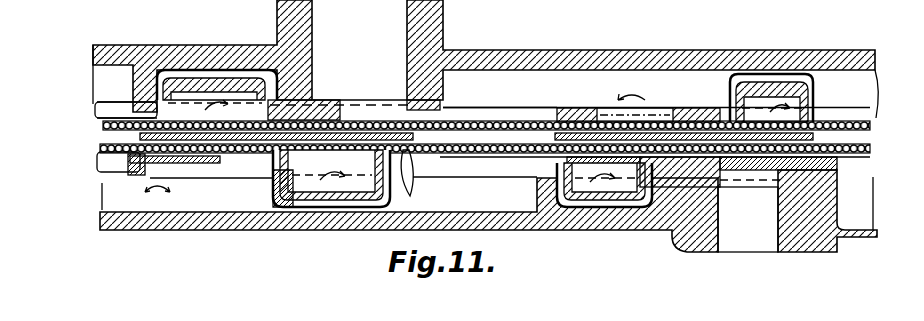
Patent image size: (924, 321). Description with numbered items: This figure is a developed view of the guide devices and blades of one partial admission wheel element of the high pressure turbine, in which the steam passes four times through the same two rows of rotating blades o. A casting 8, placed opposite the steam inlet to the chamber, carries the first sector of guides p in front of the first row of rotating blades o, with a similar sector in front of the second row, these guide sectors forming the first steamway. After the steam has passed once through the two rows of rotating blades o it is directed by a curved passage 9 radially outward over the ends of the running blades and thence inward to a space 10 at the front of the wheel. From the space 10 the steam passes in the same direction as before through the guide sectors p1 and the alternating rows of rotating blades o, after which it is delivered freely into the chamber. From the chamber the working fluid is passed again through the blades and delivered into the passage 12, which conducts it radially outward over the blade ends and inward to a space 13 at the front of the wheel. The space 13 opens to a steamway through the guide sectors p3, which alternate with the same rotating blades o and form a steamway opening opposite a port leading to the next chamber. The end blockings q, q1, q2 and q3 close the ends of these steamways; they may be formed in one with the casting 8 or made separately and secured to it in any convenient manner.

The passage 12 is at (187, 95).
The end blocking q2 is at (360, 44).
The end blocking q3 is at (356, 117).
The end blocking q1 is at (592, 126).
The end blocking q is at (727, 118).
The rotating blades o is at (483, 145).
The guide sectors p1 is at (548, 126).
The curved passage 9 is at (752, 108).
The first sector of guides p is at (768, 165).
The space 13 is at (284, 182).
The guide sectors p3 is at (349, 185).
The space 10 is at (585, 195).
The casting 8 is at (687, 173).